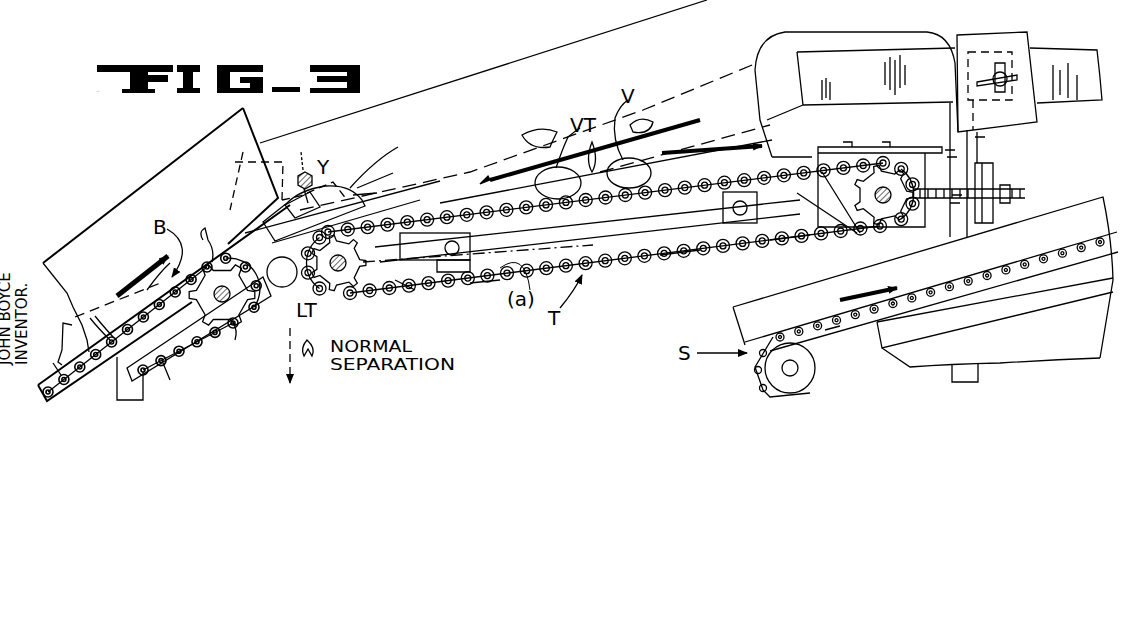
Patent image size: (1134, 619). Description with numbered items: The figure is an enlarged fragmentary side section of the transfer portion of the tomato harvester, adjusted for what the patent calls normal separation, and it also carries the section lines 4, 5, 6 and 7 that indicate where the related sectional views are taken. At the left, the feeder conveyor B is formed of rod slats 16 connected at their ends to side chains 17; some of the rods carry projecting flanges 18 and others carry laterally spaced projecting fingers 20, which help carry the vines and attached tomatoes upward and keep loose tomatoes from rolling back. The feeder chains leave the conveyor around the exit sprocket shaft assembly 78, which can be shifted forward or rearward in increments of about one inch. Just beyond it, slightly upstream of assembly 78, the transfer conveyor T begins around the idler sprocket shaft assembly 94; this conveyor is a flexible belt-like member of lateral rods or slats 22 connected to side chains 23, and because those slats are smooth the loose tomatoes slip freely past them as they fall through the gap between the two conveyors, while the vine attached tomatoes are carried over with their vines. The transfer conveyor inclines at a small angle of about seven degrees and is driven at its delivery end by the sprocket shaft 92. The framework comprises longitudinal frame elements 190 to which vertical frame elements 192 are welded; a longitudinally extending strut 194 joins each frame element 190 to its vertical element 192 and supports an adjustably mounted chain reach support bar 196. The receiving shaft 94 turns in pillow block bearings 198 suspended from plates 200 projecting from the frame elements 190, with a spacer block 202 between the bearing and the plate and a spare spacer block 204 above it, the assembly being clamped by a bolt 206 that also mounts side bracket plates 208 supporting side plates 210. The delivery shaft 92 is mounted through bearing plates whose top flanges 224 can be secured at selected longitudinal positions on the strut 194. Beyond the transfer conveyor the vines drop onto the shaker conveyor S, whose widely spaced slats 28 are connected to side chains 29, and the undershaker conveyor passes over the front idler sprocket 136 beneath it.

The slats 16 is at (182, 300).
The side chains 17 is at (197, 351).
The projecting flanges 18 is at (276, 303).
The projecting fingers 20 is at (210, 227).
The lateral rods or slats 22 is at (643, 267).
The side chains 23 is at (482, 283).
The slats 28 is at (1010, 272).
The side chains 29 is at (830, 325).
The exit sprocket shaft assembly 78 is at (236, 327).
The sprocket shaft 92 is at (893, 222).
The idler sprocket shaft assembly 94 is at (378, 292).
The front idler sprocket 136 is at (808, 372).
The frame elements 190 is at (782, 63).
The vertical frame elements 192 is at (977, 147).
The longitudinally extending strut 194 is at (792, 223).
The chain reach support bars 196 is at (687, 222).
The pillow block bearings 198 is at (400, 288).
The plates 200 is at (392, 175).
The spacer block 202 is at (382, 190).
The spacer block 204 is at (392, 163).
The bolt 206 is at (314, 190).
The side bracket plates 208 is at (245, 162).
The side plates 210 is at (506, 107).
The top flanges 224 is at (863, 147).
The section line 4- 4 is at (837, 138).
The section line 5- 5 is at (880, 218).
The section line 6- 6 is at (296, 190).
The section line 7- 7 is at (247, 175).